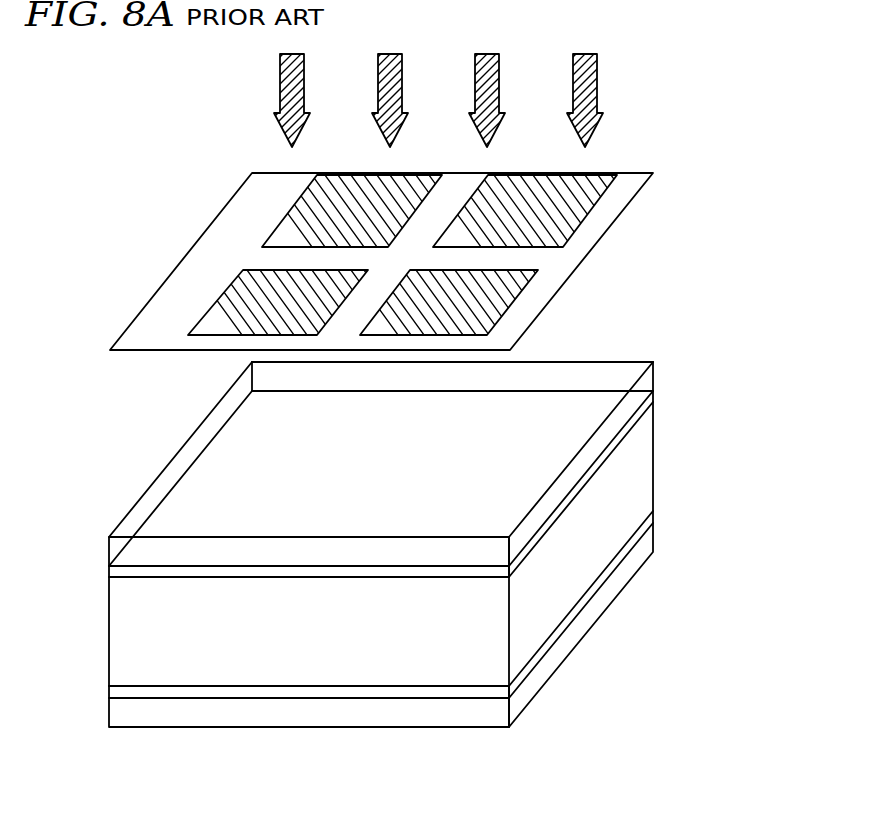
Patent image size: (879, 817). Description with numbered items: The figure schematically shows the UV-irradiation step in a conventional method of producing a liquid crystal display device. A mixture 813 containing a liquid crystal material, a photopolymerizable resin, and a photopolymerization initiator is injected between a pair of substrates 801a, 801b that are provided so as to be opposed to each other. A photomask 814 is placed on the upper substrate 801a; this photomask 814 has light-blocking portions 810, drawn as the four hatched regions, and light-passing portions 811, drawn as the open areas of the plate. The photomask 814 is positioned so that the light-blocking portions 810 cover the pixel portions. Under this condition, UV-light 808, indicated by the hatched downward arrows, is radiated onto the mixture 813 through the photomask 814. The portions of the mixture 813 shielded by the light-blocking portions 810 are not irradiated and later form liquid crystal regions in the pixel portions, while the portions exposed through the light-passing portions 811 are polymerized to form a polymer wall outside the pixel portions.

The UV-light 808 is at (598, 74).
The light-blocking portions 810 is at (595, 173).
The light-passing portions 811 is at (602, 222).
The photomask 814 is at (205, 258).
The mixture 813 is at (328, 668).
The substrate 801a is at (653, 375).
The substrate 801b is at (648, 543).